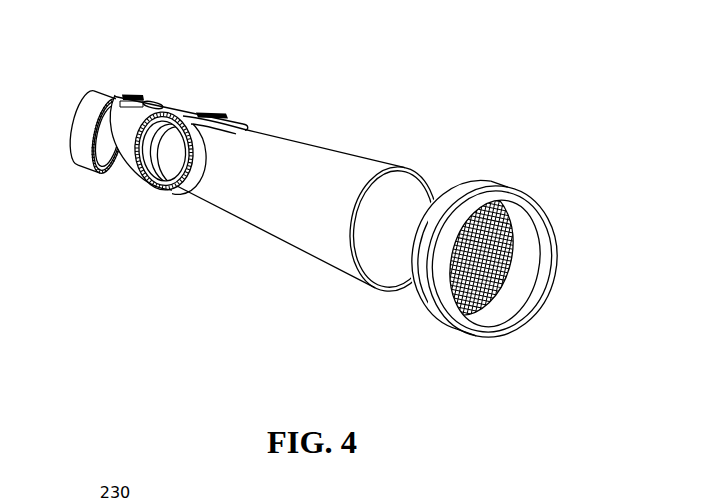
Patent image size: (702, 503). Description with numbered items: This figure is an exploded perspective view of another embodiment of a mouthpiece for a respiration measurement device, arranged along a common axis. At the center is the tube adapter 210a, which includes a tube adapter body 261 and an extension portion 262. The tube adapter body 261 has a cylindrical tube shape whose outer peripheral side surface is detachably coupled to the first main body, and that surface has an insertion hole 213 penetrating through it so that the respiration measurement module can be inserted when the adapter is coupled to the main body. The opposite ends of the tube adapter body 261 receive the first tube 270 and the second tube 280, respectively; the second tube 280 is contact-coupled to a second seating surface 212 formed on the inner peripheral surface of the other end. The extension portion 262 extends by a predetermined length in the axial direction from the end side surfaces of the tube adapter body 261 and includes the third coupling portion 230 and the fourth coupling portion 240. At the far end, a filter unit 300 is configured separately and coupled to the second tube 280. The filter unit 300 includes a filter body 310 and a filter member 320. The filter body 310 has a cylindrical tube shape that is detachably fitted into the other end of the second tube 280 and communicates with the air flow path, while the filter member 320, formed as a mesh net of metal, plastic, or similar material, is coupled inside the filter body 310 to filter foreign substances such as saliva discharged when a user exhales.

The tube adapter 210a is at (153, 191).
The second seating surface 212 is at (183, 197).
The insertion hole 213 is at (160, 103).
The third coupling portion 230 is at (134, 96).
The fourth coupling portion 240 is at (207, 117).
The tube adapter body 261 is at (132, 118).
The extension portion 262 is at (120, 95).
The first tube 270 is at (102, 170).
The second tube 280 is at (332, 138).
The filter unit 300 is at (459, 343).
The filter body 310 is at (513, 195).
The filter member 320 is at (490, 288).